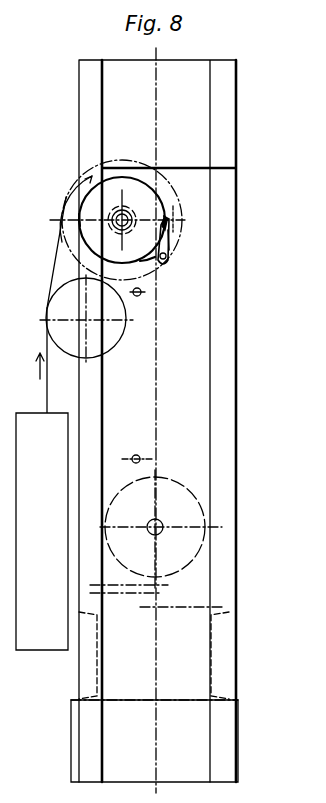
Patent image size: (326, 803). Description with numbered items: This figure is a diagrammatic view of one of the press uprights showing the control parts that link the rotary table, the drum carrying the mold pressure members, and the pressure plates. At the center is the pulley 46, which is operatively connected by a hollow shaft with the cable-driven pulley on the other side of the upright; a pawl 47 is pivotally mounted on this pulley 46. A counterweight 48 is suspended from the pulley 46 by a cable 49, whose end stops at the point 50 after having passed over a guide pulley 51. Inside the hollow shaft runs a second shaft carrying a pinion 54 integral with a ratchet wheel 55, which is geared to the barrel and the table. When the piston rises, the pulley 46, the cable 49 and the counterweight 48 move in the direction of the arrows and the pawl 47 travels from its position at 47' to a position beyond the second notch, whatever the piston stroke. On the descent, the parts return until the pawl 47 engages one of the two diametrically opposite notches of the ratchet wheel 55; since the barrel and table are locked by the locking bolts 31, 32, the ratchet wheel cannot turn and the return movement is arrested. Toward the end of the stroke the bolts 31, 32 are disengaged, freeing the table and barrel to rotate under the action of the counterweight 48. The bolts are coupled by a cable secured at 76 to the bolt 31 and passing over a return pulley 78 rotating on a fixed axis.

The ratchet wheel 55 is at (148, 196).
The pawl 47 is at (212, 233).
The pawl position 47' is at (51, 229).
The cable end stop 50 is at (175, 247).
The pulley 46 is at (148, 263).
The locking bolt 31 is at (142, 295).
The locking bolt 32 is at (140, 457).
The guide pulley 51 is at (45, 310).
The counterweight 48 is at (30, 641).
The cable 49 is at (47, 383).
The pinion 54 is at (8, 204).
The cable attachment point 76 is at (8, 279).
The return pulley 78 is at (9, 344).